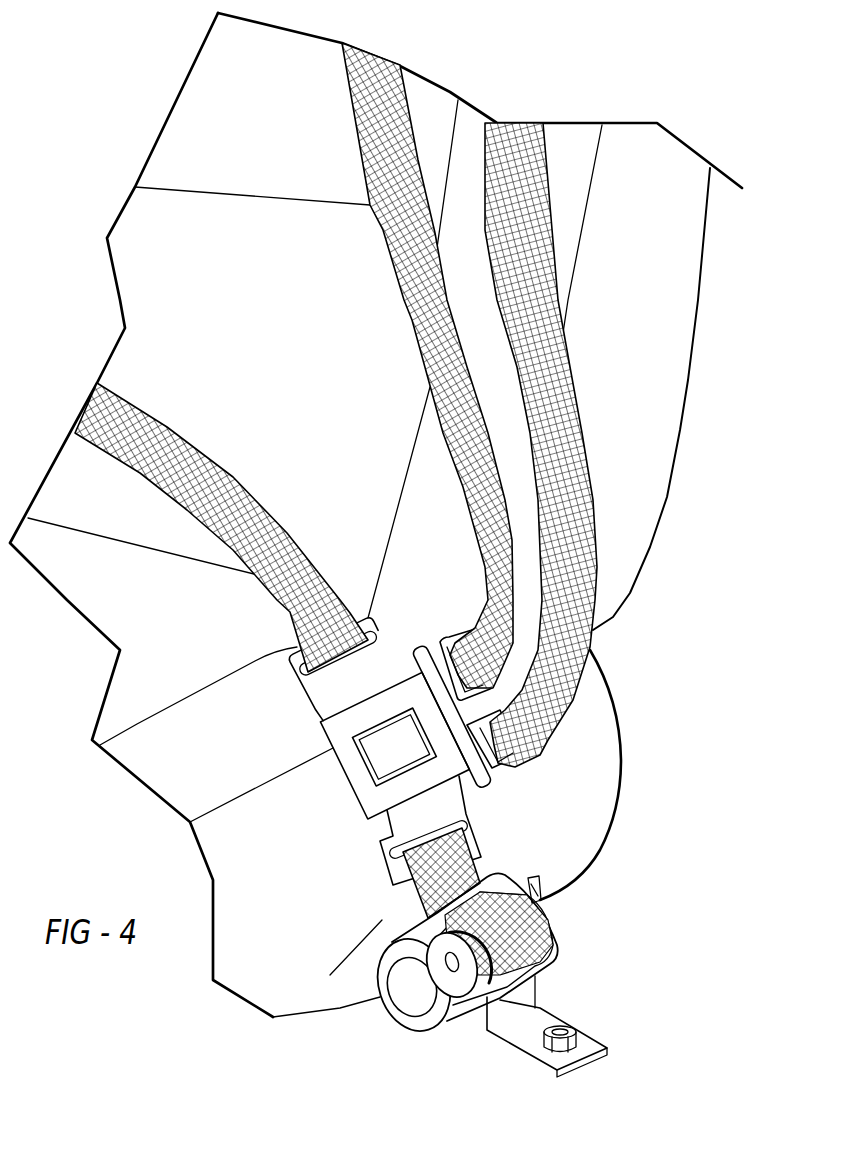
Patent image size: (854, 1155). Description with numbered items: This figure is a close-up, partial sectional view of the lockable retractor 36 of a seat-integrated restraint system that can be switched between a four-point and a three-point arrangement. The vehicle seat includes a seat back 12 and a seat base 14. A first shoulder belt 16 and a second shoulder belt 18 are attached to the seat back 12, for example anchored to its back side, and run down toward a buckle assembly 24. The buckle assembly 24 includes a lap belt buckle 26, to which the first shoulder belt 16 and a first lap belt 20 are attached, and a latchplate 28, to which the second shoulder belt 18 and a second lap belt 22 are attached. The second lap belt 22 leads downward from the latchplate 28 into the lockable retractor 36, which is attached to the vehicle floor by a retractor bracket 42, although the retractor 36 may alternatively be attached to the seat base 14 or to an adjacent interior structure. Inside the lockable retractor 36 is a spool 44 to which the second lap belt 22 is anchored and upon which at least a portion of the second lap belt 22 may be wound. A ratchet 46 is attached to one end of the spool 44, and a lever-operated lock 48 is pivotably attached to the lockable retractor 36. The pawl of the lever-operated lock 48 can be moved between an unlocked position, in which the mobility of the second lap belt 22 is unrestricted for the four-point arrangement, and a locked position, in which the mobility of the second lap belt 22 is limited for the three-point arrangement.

The seat back 12 is at (207, 78).
The seat base 14 is at (322, 955).
The first shoulder belt 16 is at (407, 240).
The second shoulder belt 18 is at (515, 203).
The first lap belt 20 is at (157, 450).
The second lap belt 22 is at (437, 890).
The buckle assembly 24 is at (397, 638).
The lap belt buckle 26 is at (338, 727).
The latchplate 28 is at (487, 805).
The lockable retractor 36 is at (417, 1000).
The retractor bracket 42 is at (540, 975).
The spool 44 is at (463, 987).
The ratchet 46 is at (560, 918).
The lever-operated lock 48 is at (538, 890).